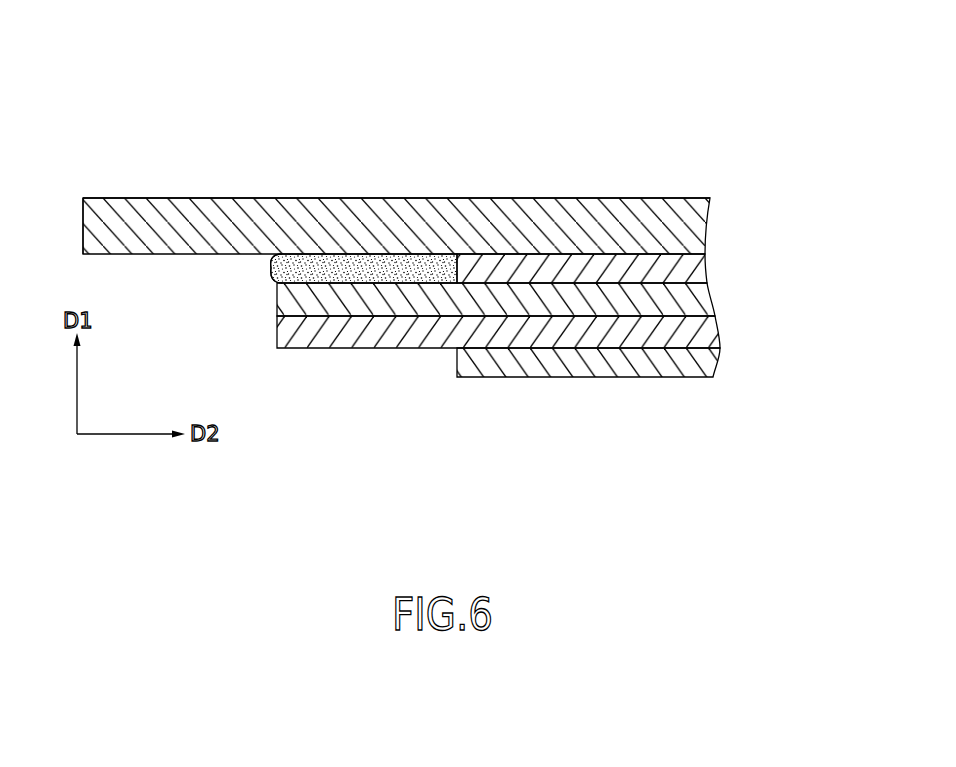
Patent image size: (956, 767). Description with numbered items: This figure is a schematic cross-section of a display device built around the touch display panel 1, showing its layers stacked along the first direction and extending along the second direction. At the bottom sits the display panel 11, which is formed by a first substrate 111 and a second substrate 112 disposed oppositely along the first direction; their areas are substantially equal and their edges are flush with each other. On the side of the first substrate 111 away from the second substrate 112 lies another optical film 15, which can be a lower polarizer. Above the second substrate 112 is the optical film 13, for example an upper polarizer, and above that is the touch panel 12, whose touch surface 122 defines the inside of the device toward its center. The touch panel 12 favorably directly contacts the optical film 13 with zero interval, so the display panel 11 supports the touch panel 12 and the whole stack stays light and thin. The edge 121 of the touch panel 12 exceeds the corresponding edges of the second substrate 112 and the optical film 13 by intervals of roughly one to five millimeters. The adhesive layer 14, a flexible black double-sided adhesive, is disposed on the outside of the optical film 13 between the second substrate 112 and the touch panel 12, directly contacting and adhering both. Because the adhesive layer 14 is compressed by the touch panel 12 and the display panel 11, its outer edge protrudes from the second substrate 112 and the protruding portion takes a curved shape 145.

The touch display panel 1 is at (166, 60).
The display panel 11 is at (560, 315).
The first substrate 111 is at (714, 333).
The second substrate 112 is at (708, 303).
The touch panel 12 is at (705, 226).
The edge of the touch panel 121 is at (83, 218).
The touch surface 122 is at (443, 198).
The optical film 13 is at (701, 268).
The adhesive layer 14 is at (338, 273).
The curved shape 145 is at (273, 268).
The another optical film 15 is at (705, 365).